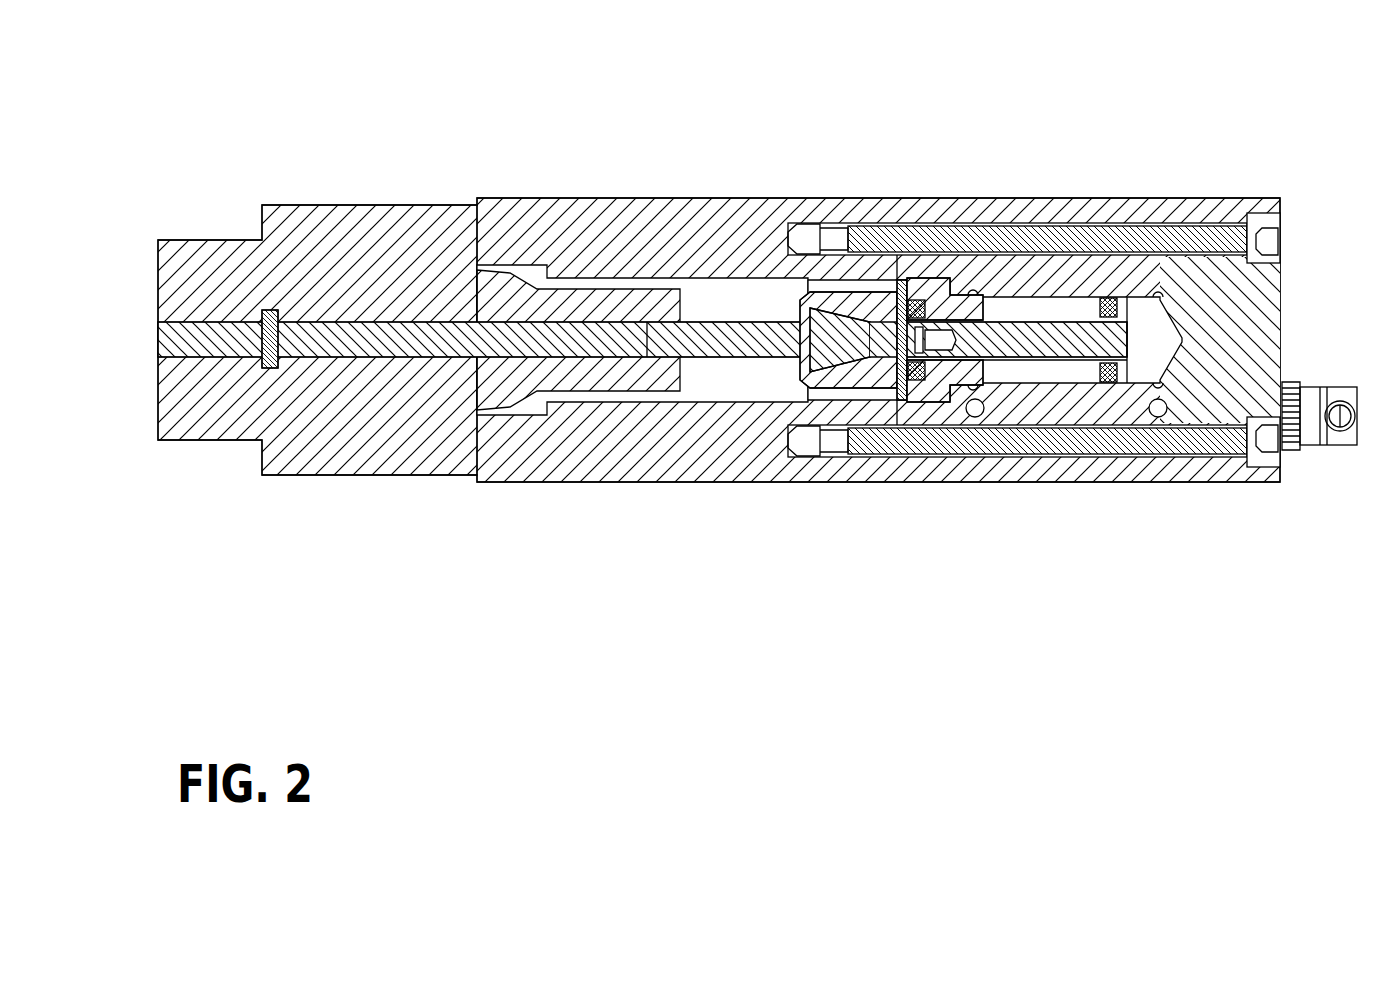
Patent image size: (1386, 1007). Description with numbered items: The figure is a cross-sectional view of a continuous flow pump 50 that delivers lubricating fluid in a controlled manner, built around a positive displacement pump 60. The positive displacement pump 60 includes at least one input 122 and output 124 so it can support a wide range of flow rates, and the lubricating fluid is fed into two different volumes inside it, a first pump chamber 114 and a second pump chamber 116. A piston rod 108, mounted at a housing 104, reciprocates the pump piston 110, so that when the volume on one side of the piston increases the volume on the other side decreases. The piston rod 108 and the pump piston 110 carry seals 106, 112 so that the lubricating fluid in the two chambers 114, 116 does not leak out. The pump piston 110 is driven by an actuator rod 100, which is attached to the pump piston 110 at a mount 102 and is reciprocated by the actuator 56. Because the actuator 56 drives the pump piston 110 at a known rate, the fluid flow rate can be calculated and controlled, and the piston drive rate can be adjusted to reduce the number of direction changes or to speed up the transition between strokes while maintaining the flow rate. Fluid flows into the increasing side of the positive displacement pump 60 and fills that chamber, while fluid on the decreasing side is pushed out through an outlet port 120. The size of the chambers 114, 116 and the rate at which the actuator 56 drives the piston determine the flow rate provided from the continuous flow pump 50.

The continuous flow pump 50 is at (224, 77).
The actuator 56 is at (390, 203).
The positive displacement pump 60 is at (1040, 483).
The actuator rod 100 is at (707, 320).
The mount 102 is at (800, 327).
The housing 104 is at (953, 283).
The seal 106 is at (913, 295).
The piston rod 108 is at (1032, 307).
The pump piston 110 is at (1100, 290).
The seal 112 is at (1117, 290).
The first pump chamber 114 is at (1047, 376).
The second pump chamber 116 is at (1140, 357).
The outlet port 120 is at (1356, 450).
The input 122 is at (981, 416).
The output 124 is at (1160, 416).